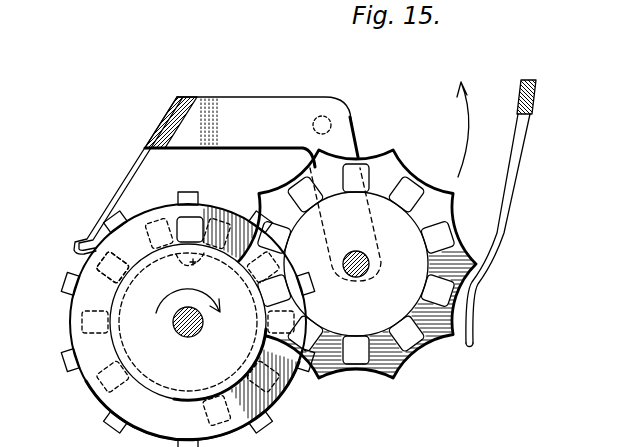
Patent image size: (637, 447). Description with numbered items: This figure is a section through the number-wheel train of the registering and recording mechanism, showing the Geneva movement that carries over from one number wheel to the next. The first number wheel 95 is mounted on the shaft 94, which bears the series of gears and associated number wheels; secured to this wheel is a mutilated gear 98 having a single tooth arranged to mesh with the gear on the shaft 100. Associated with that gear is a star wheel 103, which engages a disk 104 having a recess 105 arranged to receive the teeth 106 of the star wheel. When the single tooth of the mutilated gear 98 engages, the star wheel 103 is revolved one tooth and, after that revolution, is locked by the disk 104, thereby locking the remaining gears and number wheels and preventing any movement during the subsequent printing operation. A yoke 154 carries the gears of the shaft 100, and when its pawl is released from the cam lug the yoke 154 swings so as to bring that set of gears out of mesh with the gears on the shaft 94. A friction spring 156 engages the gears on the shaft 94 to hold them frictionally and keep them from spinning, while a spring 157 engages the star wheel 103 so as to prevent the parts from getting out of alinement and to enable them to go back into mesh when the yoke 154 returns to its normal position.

The shaft 94 is at (188, 336).
The first number wheel 95 is at (450, 441).
The mutilated gear 98 is at (107, 258).
The shaft 100 is at (359, 273).
The star wheel 103 is at (462, 255).
The disk 104 is at (133, 317).
The recess 105 is at (184, 266).
The teeth 106 is at (387, 381).
The yoke 154 is at (341, 133).
The friction spring 156 is at (134, 163).
The spring 157 is at (522, 142).